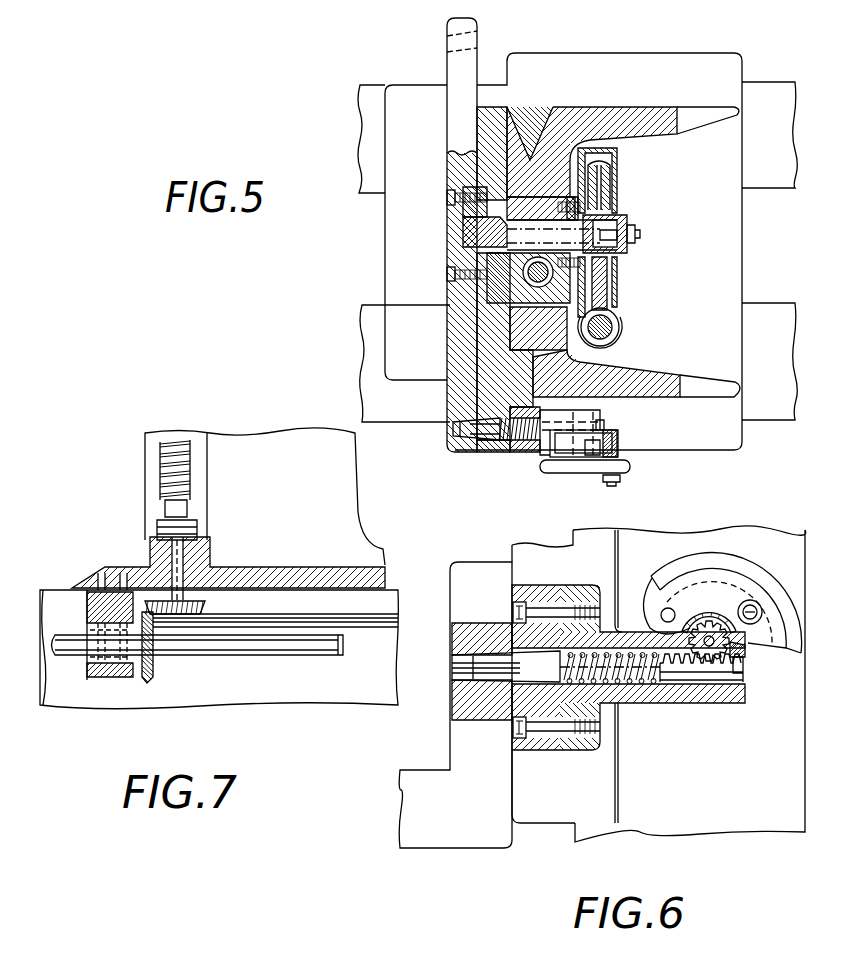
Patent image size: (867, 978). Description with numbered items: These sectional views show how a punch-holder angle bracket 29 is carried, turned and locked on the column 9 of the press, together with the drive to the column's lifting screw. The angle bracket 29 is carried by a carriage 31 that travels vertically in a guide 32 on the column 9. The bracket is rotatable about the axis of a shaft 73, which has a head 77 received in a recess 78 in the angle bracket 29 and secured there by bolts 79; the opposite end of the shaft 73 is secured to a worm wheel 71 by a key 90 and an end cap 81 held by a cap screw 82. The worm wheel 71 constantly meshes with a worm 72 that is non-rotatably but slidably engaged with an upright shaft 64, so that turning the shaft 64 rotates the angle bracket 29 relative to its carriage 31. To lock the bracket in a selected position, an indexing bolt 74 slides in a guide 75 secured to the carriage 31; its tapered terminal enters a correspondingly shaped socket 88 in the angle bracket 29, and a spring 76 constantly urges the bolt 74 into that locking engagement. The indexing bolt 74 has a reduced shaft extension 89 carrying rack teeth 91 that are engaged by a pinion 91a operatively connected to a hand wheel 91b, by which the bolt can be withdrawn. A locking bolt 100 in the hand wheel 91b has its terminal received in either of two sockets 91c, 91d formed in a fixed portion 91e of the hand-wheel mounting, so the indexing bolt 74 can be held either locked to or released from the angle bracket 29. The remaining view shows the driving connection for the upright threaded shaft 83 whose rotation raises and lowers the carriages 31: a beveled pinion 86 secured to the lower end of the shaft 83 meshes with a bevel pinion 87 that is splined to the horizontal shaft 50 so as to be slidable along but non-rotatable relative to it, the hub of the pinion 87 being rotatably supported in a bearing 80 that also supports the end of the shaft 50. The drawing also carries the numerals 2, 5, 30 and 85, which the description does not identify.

In FIG. 5, the bed 2 is at (771, 428).
In FIG. 7, the bed 2 is at (50, 586).
In FIG. 5, the carriage member 5 is at (771, 178).
In FIG. 7, the carriage member 5 is at (398, 584).
In FIG. 5, the column 9 is at (636, 102).
In FIG. 7, the column 9 is at (362, 485).
In FIG. 6, the column 9 is at (689, 684).
In FIG. 5, the angle bracket 29 is at (443, 129).
In FIG. 6, the angle bracket 29 is at (452, 832).
In FIG. 5, the body portion 30 is at (540, 206).
In FIG. 5, the carriage 31 is at (493, 112).
In FIG. 6, the carriage 31 is at (524, 556).
In FIG. 5, the guide 32 is at (514, 150).
In FIG. 7, the horizontal shaft 50 is at (275, 652).
In FIG. 5, the upright shaft 64 is at (612, 337).
In FIG. 5, the worm wheel 71 is at (598, 172).
In FIG. 5, the worm 72 is at (618, 326).
In FIG. 5, the shaft 73 is at (479, 310).
In FIG. 5, the indexing bolt 74 is at (465, 453).
In FIG. 6, the indexing bolt 74 is at (497, 705).
In FIG. 5, the guide 75 is at (500, 455).
In FIG. 6, the guide 75 is at (538, 632).
In FIG. 5, the spring 76 is at (525, 451).
In FIG. 6, the spring 76 is at (632, 703).
In FIG. 5, the head 77 is at (470, 214).
In FIG. 5, the recess 78 is at (525, 242).
In FIG. 5, the bolt 79 is at (447, 197).
In FIG. 7, the bearing 80 is at (109, 678).
In FIG. 5, the end cap 81 is at (620, 229).
In FIG. 5, the cap screw 82 is at (640, 234).
In FIG. 5, the upright threaded shaft 83 is at (553, 278).
In FIG. 7, the upright threaded shaft 83 is at (160, 452).
In FIG. 7, the flange 85 is at (200, 541).
In FIG. 7, the beveled pinion 86 is at (210, 608).
In FIG. 7, the bevel pinion 87 is at (152, 673).
In FIG. 5, the socket 88 is at (458, 429).
In FIG. 6, the socket 88 is at (468, 672).
In FIG. 6, the reduced shaft extension 89 is at (680, 703).
In FIG. 5, the key 90 is at (600, 229).
In FIG. 5, the rack teeth 91 is at (578, 433).
In FIG. 6, the rack teeth 91 is at (707, 703).
In FIG. 5, the pinion 91a is at (600, 428).
In FIG. 6, the pinion 91a is at (745, 650).
In FIG. 5, the hand wheel 91b is at (556, 472).
In FIG. 6, the hand wheel 91b is at (750, 566).
In FIG. 5, the socket 91c is at (612, 440).
In FIG. 6, the socket 91c is at (758, 605).
In FIG. 6, the socket 91d is at (704, 622).
In FIG. 5, the fixed portion 91e is at (618, 448).
In FIG. 6, the fixed portion 91e is at (660, 600).
In FIG. 5, the locking bolt 100 is at (607, 482).
In FIG. 6, the locking bolt 100 is at (752, 604).